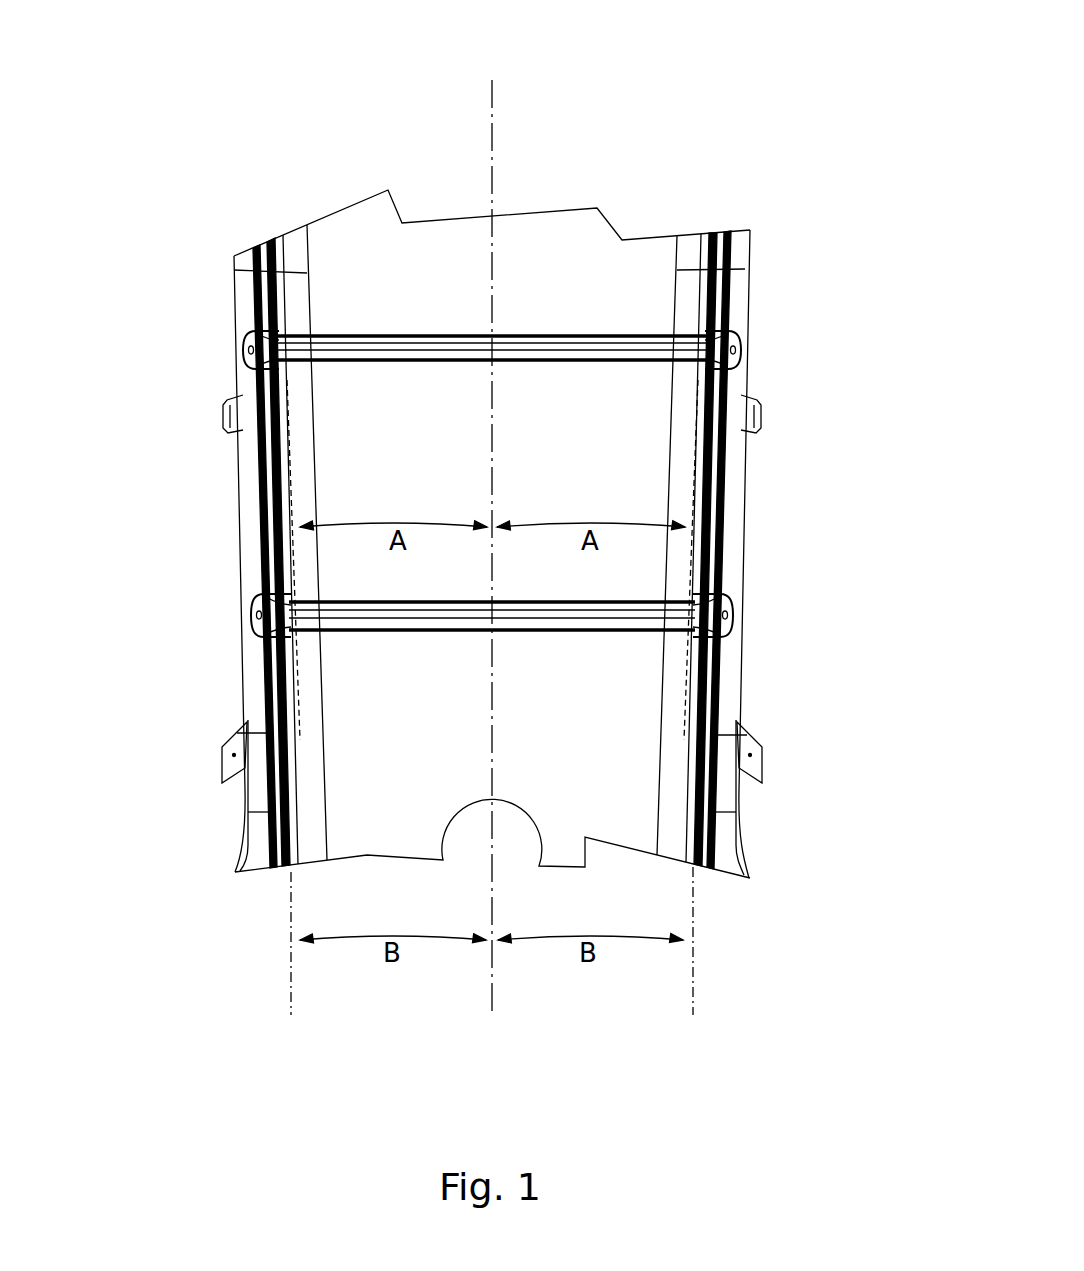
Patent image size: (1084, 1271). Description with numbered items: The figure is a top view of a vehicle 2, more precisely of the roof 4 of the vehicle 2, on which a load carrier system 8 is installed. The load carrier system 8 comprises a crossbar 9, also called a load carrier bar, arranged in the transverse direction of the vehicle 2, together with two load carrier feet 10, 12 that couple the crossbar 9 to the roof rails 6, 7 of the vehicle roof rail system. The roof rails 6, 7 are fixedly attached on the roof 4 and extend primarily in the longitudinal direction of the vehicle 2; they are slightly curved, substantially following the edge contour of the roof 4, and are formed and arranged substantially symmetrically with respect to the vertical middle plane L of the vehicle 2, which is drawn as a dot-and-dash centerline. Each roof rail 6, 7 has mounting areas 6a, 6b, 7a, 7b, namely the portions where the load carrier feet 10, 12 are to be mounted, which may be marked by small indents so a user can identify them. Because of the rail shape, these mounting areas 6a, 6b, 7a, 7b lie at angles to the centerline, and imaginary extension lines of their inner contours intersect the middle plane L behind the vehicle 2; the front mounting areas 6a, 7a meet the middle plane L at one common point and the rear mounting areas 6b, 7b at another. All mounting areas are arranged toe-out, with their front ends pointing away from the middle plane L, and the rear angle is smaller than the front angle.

The vehicle 2 is at (808, 258).
The roof 4 is at (555, 263).
The roof rail 6 is at (720, 478).
The front mounting area 6a is at (730, 380).
The rear mounting area 6b is at (720, 645).
The roof rail 7 is at (253, 278).
The front mounting area 7a is at (257, 382).
The rear mounting area 7b is at (260, 647).
The load carrier system 8 is at (593, 310).
The crossbar 9 is at (340, 357).
The load carrier foot 10 is at (757, 343).
The load carrier foot 12 is at (227, 350).
The middle plane L is at (493, 100).